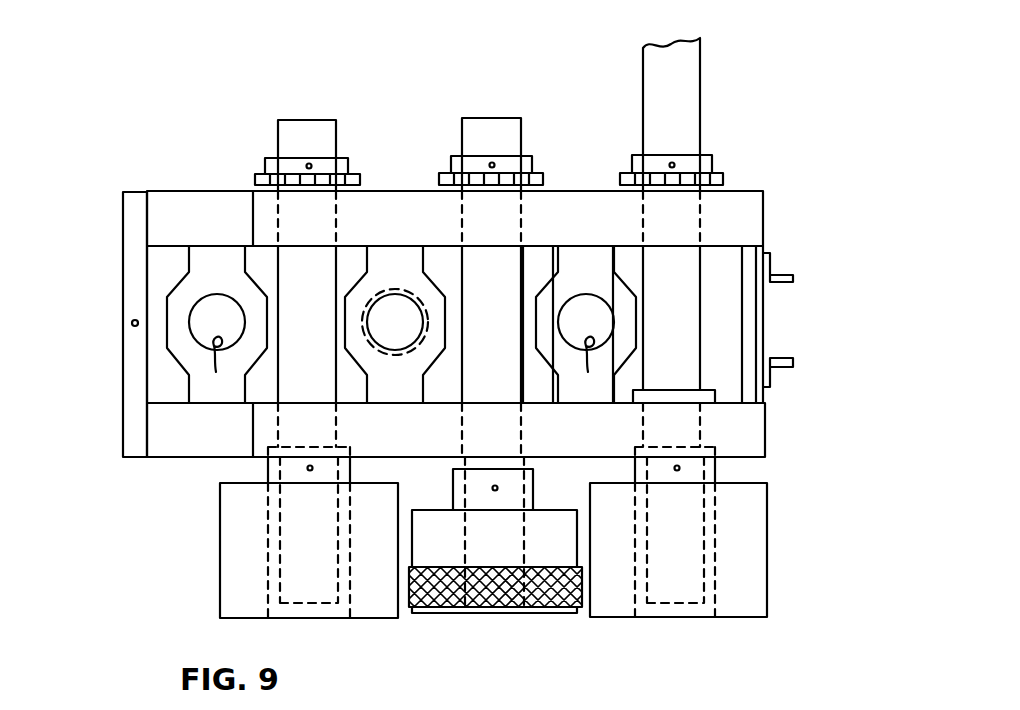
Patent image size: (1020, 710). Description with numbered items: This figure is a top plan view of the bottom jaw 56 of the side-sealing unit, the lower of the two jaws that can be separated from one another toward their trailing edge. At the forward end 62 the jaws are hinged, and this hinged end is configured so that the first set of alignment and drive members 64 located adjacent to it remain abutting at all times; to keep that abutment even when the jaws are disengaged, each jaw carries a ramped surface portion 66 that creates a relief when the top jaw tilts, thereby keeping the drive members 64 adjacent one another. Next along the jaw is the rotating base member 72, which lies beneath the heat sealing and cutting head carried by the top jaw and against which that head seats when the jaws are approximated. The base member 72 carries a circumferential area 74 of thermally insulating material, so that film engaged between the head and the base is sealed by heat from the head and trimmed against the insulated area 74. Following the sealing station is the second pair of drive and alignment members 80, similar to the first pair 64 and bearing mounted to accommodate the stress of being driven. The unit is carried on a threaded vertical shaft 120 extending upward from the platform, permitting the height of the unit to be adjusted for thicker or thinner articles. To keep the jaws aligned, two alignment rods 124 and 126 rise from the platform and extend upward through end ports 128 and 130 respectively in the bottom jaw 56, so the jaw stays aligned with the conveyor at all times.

The bottom jaw 56 is at (779, 193).
The forward end 62 is at (106, 304).
The first set of alignment and drive members 64 is at (377, 620).
The ramped surface portion 66 is at (195, 437).
The rotating base member 72 is at (555, 613).
The circumferential area 74 is at (492, 602).
The second pair of drive and alignment members 80 is at (737, 620).
The threaded vertical shaft 120 is at (392, 290).
The alignment rod 124 is at (586, 294).
The alignment rod 126 is at (210, 294).
The end port 128 is at (583, 367).
The end port 130 is at (509, 325).